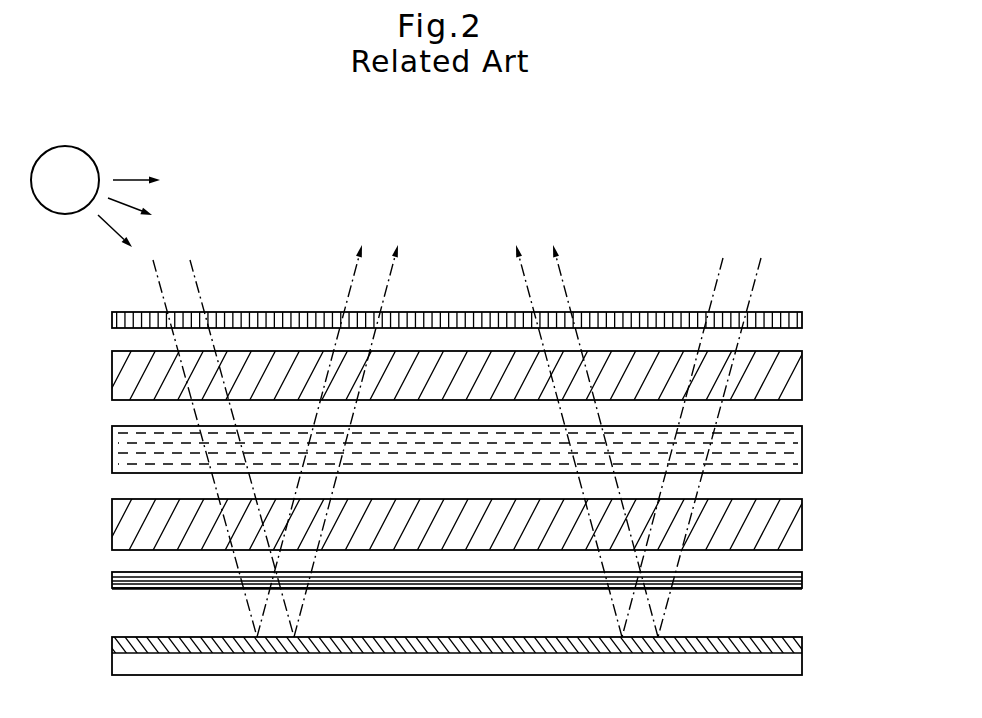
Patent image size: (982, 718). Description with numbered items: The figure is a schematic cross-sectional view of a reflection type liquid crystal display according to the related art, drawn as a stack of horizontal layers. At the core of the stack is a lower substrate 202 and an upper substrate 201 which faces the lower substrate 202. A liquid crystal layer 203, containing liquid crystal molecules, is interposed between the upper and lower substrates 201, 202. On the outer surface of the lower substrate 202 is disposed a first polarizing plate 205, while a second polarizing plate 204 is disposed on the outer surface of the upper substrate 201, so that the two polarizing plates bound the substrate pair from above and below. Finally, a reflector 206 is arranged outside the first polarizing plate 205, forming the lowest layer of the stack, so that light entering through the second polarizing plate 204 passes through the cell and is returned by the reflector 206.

The upper substrate 201 is at (802, 375).
The lower substrate 202 is at (802, 524).
The liquid crystal layer 203 is at (802, 449).
The second polarizing plate 204 is at (802, 320).
The first polarizing plate 205 is at (802, 580).
The reflector 206 is at (802, 651).